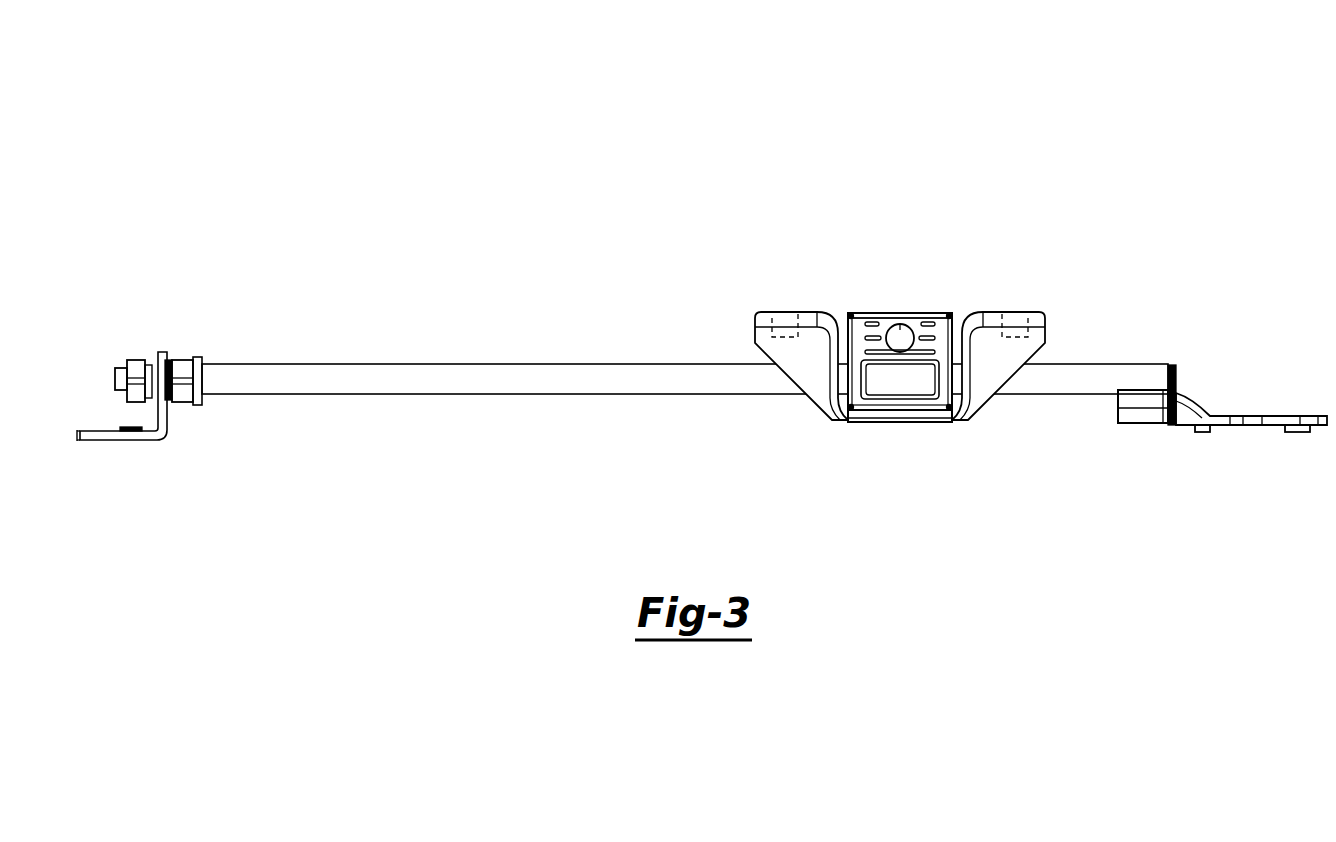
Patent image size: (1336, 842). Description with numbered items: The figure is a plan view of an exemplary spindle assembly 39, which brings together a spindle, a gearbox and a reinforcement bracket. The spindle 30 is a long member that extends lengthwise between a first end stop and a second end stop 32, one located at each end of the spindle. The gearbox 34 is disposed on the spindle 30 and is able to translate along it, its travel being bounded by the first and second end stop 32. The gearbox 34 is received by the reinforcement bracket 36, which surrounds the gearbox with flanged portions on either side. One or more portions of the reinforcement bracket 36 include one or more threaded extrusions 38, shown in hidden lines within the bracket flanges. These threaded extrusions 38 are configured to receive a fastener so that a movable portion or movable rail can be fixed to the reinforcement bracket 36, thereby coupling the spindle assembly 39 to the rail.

The spindle 30 is at (405, 373).
The end stop 32 is at (160, 360).
The gearbox 34 is at (838, 420).
The reinforcement bracket 36 is at (753, 313).
The threaded extrusions 38 is at (778, 335).
The spindle assembly 39 is at (224, 106).